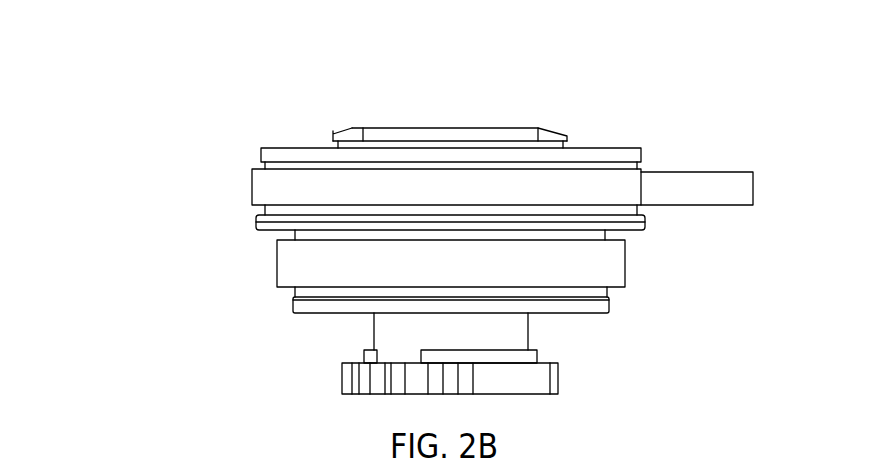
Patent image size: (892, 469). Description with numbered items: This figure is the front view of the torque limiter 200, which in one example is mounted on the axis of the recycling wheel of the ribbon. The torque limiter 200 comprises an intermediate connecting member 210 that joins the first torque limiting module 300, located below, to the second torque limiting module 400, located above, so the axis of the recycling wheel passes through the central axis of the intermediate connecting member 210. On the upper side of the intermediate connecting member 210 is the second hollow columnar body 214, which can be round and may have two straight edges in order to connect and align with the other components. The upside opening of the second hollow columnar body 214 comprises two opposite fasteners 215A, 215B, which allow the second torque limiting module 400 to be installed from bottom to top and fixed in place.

The torque limiter 200 is at (208, 56).
The intermediate connecting member 210 is at (646, 227).
The second hollow columnar body 214 is at (512, 128).
The fastener 215A is at (568, 138).
The fastener 215B is at (333, 138).
The first torque limiting module 300 is at (328, 391).
The second torque limiting module 400 is at (258, 151).